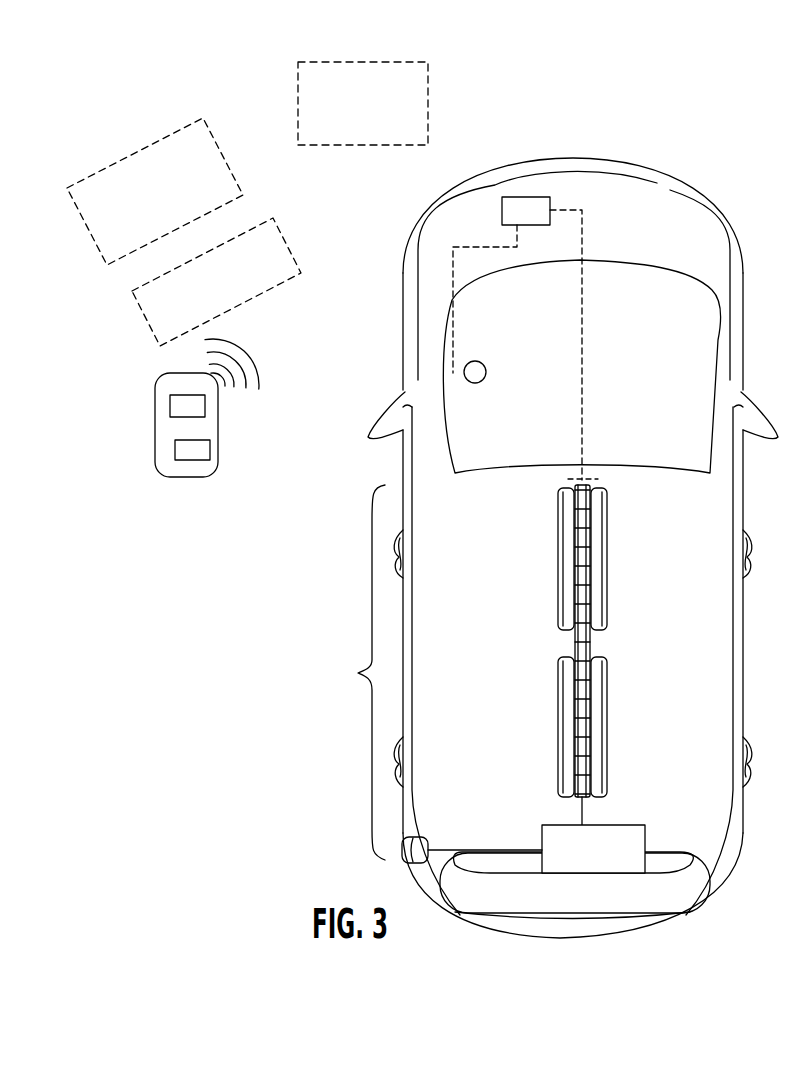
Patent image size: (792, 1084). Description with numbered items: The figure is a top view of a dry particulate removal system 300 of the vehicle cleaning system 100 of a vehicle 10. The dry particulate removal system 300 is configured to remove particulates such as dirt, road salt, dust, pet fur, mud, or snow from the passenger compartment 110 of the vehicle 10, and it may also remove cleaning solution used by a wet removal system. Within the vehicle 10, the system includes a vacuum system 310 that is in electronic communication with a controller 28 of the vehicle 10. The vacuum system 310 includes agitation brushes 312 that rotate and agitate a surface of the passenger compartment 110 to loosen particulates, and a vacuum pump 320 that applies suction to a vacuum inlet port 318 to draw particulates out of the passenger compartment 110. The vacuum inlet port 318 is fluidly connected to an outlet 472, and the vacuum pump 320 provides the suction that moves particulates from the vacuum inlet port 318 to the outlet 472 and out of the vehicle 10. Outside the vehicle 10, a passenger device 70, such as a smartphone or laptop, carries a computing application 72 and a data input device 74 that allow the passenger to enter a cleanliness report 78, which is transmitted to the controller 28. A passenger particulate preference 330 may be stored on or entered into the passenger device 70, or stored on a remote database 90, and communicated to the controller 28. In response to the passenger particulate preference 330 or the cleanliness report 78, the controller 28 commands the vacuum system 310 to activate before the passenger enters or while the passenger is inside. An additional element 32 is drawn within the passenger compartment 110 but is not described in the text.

The vehicle 10 is at (657, 193).
The controller 28 is at (525, 338).
The sensor 32 is at (480, 361).
The passenger device 70 is at (172, 374).
The computing application 72 is at (205, 406).
The data input device 74 is at (210, 449).
The cleanliness report 78 is at (263, 223).
The remote database 90 is at (428, 93).
The vehicle cleaning system 100 is at (401, 218).
The passenger compartment 110 is at (690, 668).
The dry particulate removal system 300 is at (389, 284).
The vacuum system 310 is at (351, 672).
The agitation brushes 312 is at (598, 542).
The vacuum inlet port 318 is at (583, 761).
The vacuum pump 320 is at (610, 862).
The passenger particulate preference 330 is at (185, 125).
The outlet 472 is at (421, 833).